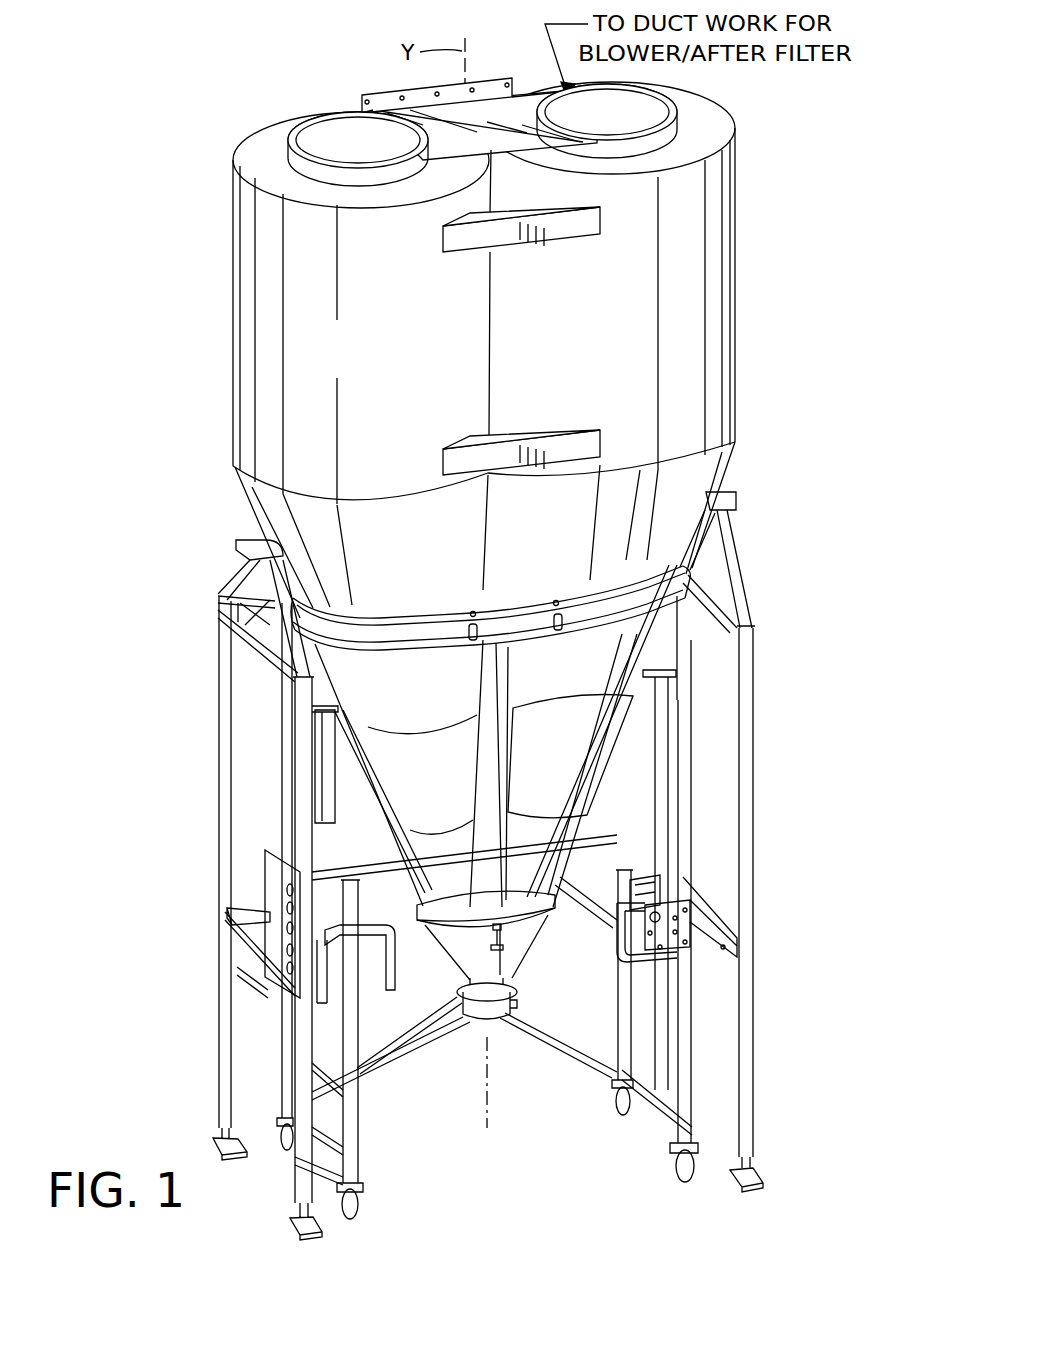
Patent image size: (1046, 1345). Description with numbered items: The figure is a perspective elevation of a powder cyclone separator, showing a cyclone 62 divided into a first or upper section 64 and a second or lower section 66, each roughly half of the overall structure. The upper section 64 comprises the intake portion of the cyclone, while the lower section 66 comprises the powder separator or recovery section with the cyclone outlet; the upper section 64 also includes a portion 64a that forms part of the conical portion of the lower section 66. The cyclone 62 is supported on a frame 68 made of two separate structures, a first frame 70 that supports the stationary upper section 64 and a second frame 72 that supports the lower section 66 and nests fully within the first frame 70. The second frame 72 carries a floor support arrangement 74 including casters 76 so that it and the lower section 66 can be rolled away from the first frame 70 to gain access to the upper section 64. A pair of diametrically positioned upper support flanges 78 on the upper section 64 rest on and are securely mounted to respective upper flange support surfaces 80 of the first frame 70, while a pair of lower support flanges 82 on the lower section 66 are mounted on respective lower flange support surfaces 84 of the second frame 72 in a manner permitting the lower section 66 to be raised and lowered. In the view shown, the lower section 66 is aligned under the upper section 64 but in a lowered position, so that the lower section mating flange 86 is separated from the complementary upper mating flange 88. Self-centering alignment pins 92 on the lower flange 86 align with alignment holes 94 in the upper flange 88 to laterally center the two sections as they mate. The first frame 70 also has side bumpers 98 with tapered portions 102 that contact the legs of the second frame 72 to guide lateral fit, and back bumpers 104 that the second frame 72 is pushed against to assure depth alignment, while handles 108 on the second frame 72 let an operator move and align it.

The cyclone 62 is at (816, 85).
The upper section 64 is at (125, 88).
The portion 64a is at (612, 490).
The lower section 66 is at (125, 1008).
The frame 68 is at (182, 1075).
The first frame section 70 is at (222, 713).
The second frame section 72 is at (366, 1103).
The floor support arrangement 74 is at (559, 1157).
The casters 76 is at (285, 1142).
The upper support flanges 78 is at (238, 500).
The upper flange support surfaces 80 is at (252, 541).
The lower support flanges 82 is at (320, 698).
The lower flange support surfaces 84 is at (318, 707).
The lower section mating flange 86 is at (423, 657).
The upper mating flange 88 is at (690, 578).
The self-centering alignment pins 92 is at (473, 643).
The alignment holes 94 is at (473, 612).
The side bumpers 98 is at (250, 901).
The tapered portions 102 is at (703, 945).
The back bumpers 104 is at (245, 1008).
The handles 108 is at (370, 990).